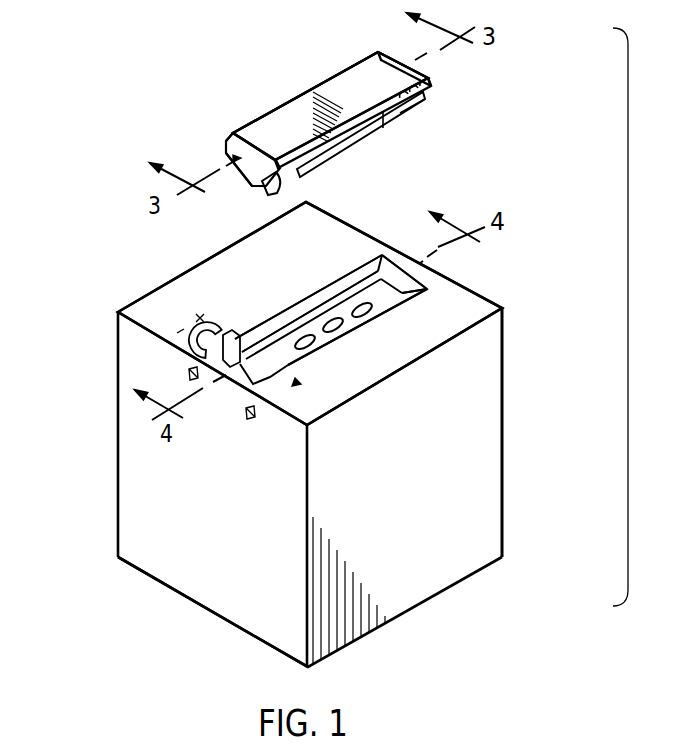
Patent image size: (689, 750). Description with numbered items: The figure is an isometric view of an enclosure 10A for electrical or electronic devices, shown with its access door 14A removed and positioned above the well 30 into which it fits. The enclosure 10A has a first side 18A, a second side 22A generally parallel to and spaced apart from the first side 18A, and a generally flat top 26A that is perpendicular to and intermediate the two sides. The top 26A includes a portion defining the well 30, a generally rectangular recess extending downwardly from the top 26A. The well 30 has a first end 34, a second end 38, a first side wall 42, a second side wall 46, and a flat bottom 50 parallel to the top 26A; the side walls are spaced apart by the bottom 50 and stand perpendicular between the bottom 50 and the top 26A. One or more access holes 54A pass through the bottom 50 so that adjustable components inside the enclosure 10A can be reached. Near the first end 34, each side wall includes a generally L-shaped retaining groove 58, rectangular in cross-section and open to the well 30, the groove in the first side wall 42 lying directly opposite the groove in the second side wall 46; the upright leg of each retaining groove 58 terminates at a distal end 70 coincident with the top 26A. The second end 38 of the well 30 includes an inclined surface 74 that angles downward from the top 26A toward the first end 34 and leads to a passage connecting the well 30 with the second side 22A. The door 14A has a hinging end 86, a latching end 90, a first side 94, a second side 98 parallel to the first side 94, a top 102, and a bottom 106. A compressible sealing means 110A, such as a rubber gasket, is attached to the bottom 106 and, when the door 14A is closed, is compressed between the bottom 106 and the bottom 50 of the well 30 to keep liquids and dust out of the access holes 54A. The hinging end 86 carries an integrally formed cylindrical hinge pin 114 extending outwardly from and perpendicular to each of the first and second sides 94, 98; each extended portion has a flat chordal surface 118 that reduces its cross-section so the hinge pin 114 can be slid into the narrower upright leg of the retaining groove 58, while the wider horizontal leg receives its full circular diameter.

The enclosure 10A is at (116, 408).
The access door 14A is at (289, 98).
The first side 18A is at (163, 558).
The second side 22A is at (505, 420).
The top 26A is at (442, 335).
The well 30 is at (284, 307).
The first end 34 is at (233, 385).
The second end 38 is at (399, 255).
The first side wall 42 is at (338, 280).
The second side wall 46 is at (326, 337).
The bottom 50 is at (440, 298).
The access holes 54A is at (423, 331).
The retaining groove 58 is at (298, 385).
The distal end 70 is at (277, 375).
The inclined surface 74 is at (430, 264).
The hinging end 86 is at (245, 184).
The latching end 90 is at (430, 72).
The first side 94 is at (350, 66).
The second side 98 is at (356, 128).
The top 102 is at (260, 121).
The bottom 106 is at (400, 113).
The compressible sealing means 110A is at (383, 131).
The hinge pin 114 is at (228, 178).
The flat chordal surface 118 is at (228, 146).